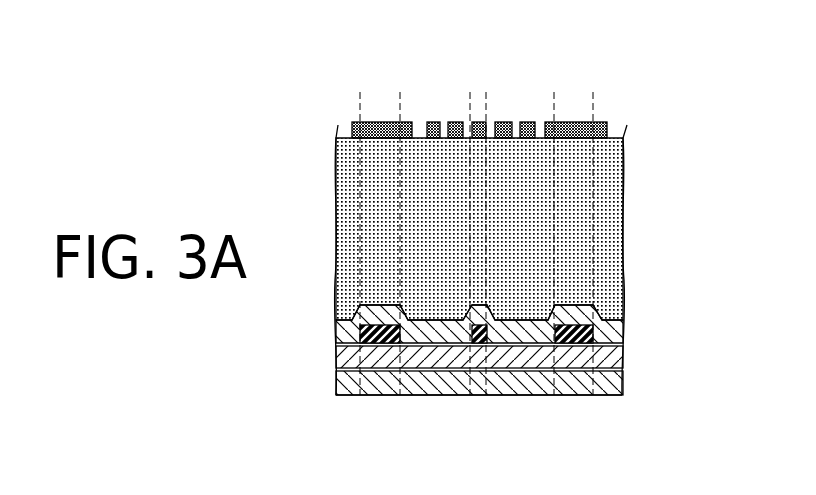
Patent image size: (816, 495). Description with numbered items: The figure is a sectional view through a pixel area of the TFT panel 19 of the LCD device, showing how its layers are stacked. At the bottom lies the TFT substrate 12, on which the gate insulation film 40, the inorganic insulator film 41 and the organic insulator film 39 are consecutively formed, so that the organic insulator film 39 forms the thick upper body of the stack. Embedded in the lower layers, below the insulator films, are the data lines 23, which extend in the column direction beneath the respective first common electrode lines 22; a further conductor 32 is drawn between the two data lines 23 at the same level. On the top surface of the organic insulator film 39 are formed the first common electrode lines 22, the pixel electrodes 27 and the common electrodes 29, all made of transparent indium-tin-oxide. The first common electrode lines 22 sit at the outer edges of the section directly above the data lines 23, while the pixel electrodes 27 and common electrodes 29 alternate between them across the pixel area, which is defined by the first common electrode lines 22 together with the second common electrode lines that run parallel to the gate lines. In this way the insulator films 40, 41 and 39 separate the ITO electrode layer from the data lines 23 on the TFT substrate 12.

The TFT panel 19 is at (660, 129).
The first common electrode line 22 is at (379, 122).
The pixel electrode 27 is at (433, 122).
The common electrode 29 is at (455, 122).
The organic insulator film 39 is at (615, 218).
The inorganic insulator film 41 is at (612, 327).
The gate insulation film 40 is at (612, 357).
The TFT substrate 12 is at (612, 385).
The data line 23 is at (373, 345).
The wiring 32 is at (482, 345).